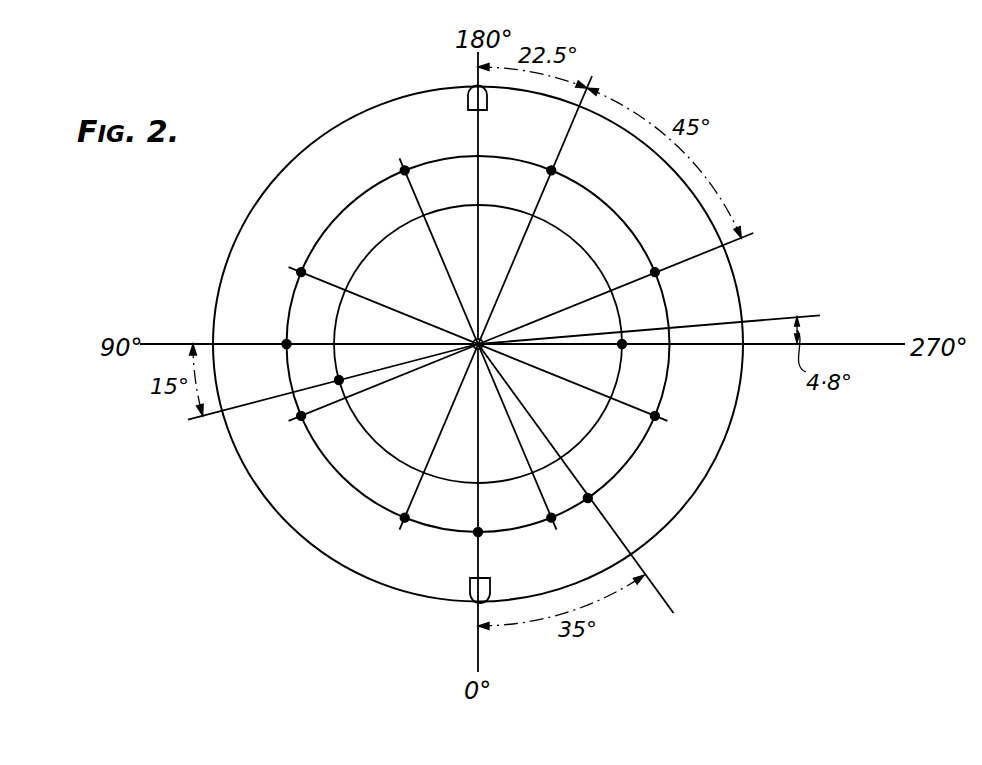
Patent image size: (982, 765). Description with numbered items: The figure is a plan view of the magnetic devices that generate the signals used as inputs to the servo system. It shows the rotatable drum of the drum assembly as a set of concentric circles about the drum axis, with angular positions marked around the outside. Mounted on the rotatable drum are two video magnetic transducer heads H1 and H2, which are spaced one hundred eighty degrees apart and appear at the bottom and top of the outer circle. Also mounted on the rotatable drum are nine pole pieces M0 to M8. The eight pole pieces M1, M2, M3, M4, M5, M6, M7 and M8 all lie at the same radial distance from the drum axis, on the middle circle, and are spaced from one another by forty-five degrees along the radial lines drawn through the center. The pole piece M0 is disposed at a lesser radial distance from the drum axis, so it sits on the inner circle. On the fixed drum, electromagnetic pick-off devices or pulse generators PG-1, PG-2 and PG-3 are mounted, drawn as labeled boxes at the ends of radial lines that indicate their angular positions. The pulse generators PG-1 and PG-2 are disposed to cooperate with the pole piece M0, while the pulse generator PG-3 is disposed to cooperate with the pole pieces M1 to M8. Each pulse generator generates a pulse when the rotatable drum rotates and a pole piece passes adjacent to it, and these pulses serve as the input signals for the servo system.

The video magnetic transducer head H1 is at (470, 588).
The video magnetic transducer head H2 is at (468, 100).
The pole piece M0 is at (307, 334).
The pole piece M1 is at (470, 332).
The pole piece M2 is at (478, 337).
The pole piece M3 is at (497, 303).
The pole piece M4 is at (521, 327).
The pole piece M5 is at (675, 410).
The pole piece M6 is at (570, 526).
The pole piece M7 is at (386, 526).
The pole piece M8 is at (284, 417).
The pulse generator PG-1 is at (301, 392).
The pulse generator PG-2 is at (669, 482).
The pulse generator PG-3 is at (594, 493).